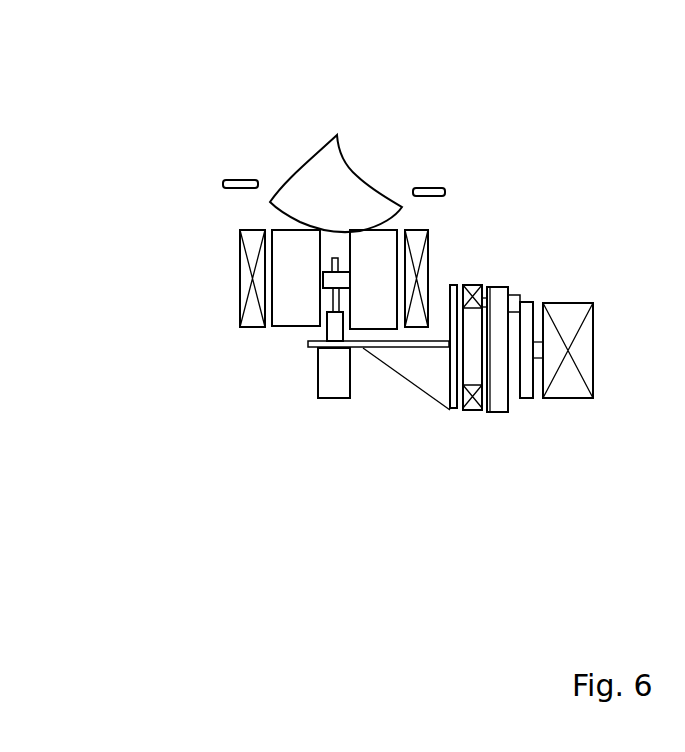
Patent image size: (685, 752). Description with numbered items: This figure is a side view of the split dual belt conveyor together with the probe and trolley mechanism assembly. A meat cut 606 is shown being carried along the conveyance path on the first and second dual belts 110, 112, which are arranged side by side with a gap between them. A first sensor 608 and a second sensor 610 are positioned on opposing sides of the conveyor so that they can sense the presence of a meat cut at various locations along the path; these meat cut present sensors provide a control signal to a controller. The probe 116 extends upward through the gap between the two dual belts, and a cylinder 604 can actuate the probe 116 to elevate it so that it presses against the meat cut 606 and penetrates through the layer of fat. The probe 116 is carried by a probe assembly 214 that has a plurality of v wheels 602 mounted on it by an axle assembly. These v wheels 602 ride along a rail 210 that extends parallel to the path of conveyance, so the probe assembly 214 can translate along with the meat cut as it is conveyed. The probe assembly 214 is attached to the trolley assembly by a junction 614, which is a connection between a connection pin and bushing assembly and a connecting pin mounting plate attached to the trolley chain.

The first dual belt 110 is at (378, 253).
The second dual belt 112 is at (287, 250).
The probe 116 is at (312, 269).
The rail 210 is at (458, 379).
The probe assembly 214 is at (446, 320).
The v wheels 602 is at (487, 431).
The cylinder 604 is at (306, 395).
The meat cut 606 is at (328, 183).
The first sensor 608 is at (223, 182).
The second sensor 610 is at (428, 187).
The junction 614 is at (518, 294).